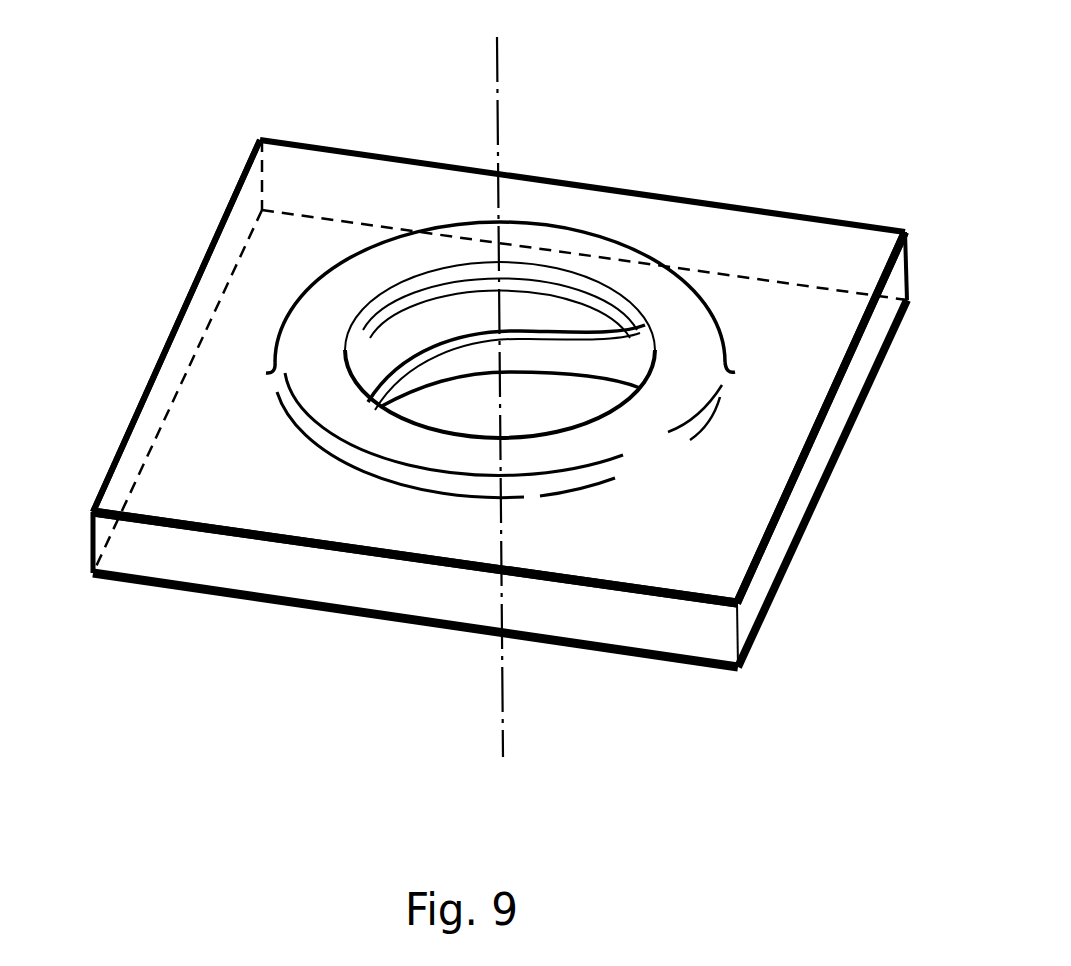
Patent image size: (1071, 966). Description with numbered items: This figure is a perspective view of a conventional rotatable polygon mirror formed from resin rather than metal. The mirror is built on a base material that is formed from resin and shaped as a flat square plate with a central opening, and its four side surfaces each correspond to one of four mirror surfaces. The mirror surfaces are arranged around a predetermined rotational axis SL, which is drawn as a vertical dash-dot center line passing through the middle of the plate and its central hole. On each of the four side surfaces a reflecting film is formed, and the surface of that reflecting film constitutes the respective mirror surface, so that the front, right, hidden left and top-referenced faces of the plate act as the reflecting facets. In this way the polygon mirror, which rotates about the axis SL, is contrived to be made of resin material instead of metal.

The rotational axis SL is at (499, 67).